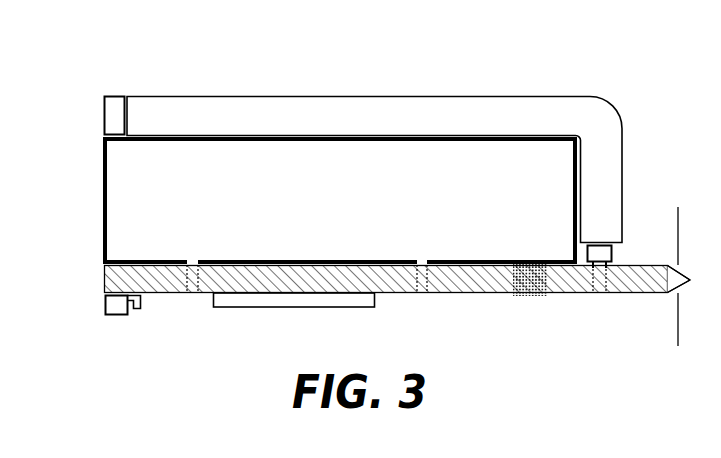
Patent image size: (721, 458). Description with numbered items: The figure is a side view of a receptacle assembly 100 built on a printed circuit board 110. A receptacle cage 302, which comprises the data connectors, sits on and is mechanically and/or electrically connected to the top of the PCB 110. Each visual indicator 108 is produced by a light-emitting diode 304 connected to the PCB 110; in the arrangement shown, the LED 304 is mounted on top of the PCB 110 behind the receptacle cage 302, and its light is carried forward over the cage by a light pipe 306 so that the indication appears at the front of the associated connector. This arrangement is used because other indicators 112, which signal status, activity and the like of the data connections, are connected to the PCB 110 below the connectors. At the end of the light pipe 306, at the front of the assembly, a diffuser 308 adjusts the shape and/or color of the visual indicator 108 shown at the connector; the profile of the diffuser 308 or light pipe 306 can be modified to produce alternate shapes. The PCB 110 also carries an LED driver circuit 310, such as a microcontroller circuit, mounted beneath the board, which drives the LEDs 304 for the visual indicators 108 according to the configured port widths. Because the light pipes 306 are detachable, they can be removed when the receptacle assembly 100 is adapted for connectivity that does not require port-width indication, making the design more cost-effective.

The receptacle assembly 100 is at (662, 61).
The visual indicator 108 is at (84, 104).
The printed circuit board 110 is at (637, 285).
The other indicators 112 is at (112, 305).
The receptacle cage 302 is at (363, 212).
The light-emitting diode 304 is at (612, 252).
The light pipe 306 is at (403, 108).
The diffuser 308 is at (115, 105).
The LED driver circuit 310 is at (275, 300).